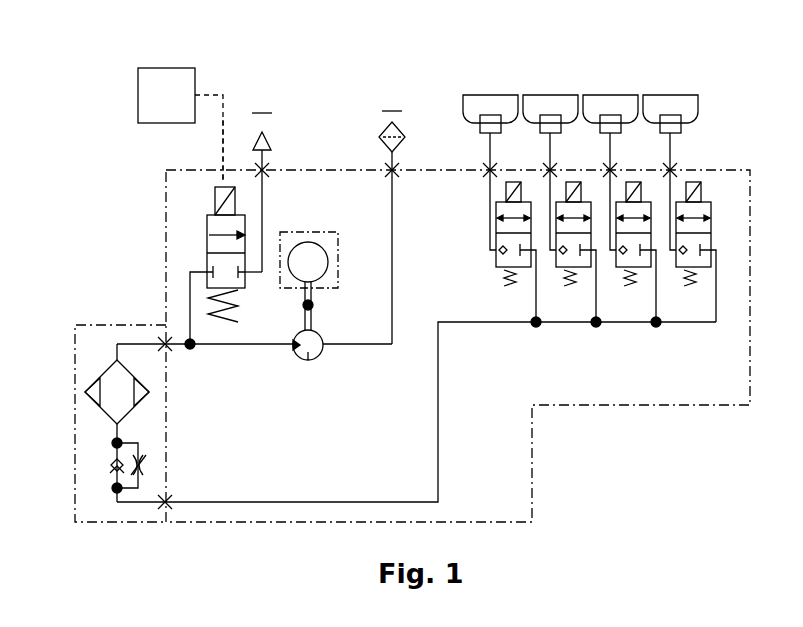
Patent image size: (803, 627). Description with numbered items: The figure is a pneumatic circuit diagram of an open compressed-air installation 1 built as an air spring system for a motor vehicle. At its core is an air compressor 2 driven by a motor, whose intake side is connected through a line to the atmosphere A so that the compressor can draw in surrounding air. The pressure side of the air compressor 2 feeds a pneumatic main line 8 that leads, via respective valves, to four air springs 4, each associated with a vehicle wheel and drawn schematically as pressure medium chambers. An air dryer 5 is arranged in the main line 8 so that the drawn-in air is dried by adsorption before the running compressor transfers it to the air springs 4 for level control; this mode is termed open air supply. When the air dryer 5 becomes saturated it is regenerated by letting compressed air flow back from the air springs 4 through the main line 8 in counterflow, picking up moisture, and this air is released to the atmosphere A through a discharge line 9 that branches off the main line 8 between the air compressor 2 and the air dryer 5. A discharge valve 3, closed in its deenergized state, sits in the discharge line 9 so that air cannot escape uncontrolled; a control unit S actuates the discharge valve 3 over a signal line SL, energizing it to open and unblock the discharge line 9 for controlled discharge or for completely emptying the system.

The compressed-air installation 1 is at (328, 86).
The air compressor 2 is at (311, 362).
The discharge valve 3 is at (207, 230).
The air springs 4 is at (586, 72).
The air dryer 5 is at (113, 372).
The main line 8 is at (248, 345).
The discharge line 9 is at (190, 307).
The control unit S is at (180, 125).
The signal line SL is at (223, 151).
The atmosphere A is at (328, 216).